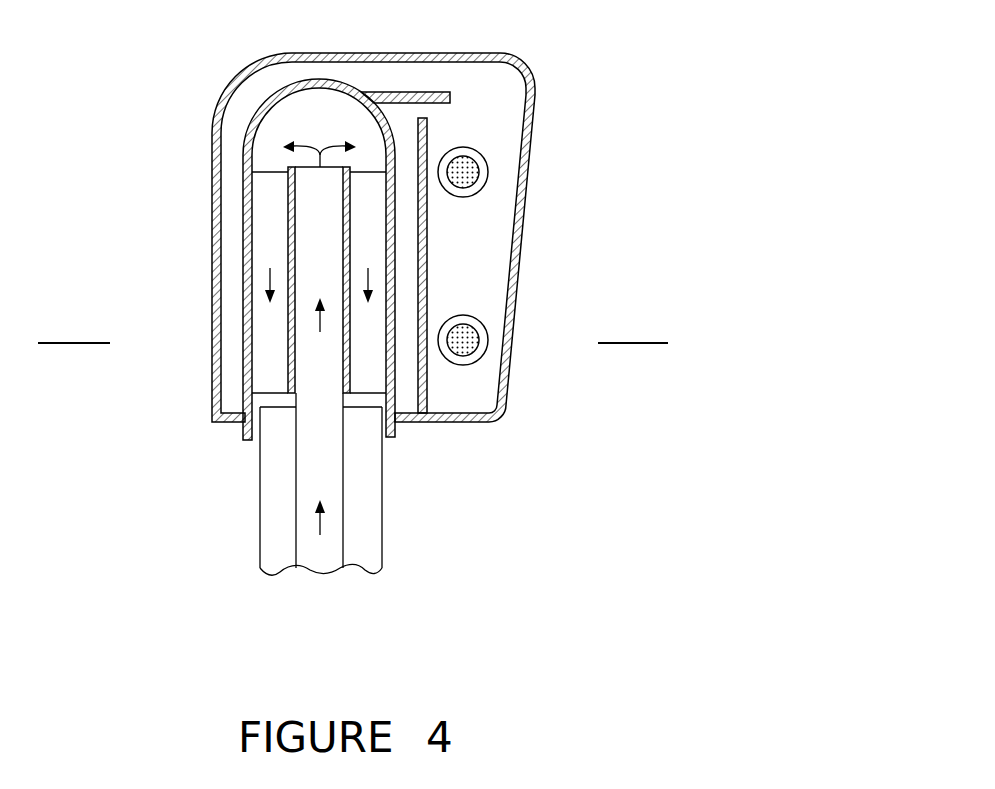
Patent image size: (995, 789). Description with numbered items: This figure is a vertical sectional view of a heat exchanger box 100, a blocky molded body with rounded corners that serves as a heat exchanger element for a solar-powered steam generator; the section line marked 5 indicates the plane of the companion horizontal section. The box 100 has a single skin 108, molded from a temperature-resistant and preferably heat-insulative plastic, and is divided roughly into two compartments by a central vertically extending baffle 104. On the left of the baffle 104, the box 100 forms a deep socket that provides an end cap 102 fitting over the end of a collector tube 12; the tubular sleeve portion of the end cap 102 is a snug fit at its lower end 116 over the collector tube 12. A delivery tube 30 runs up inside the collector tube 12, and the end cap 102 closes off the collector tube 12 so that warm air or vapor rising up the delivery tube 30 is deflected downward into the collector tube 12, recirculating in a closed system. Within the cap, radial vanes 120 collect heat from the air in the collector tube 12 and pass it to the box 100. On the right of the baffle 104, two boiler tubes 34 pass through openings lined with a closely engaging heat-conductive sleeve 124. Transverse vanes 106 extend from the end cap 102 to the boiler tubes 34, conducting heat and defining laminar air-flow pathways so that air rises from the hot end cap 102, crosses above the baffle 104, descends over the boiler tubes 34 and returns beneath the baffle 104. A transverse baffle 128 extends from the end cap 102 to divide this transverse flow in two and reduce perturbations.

The heat exchanger box 100 is at (706, 170).
The transverse vanes 106 is at (365, 249).
The single skin 108 is at (240, 78).
The end cap 102 is at (250, 157).
The radial vanes 120 is at (273, 363).
The delivery tube 30 is at (343, 493).
The collector tube 12 is at (260, 488).
The baffle 104 is at (425, 228).
The transverse baffle 128 is at (415, 92).
The boiler tubes 34 is at (487, 167).
The heat-conductive sleeve 124 is at (467, 177).
The lower end 116 is at (247, 443).
The section line 5- 5 is at (68, 335).